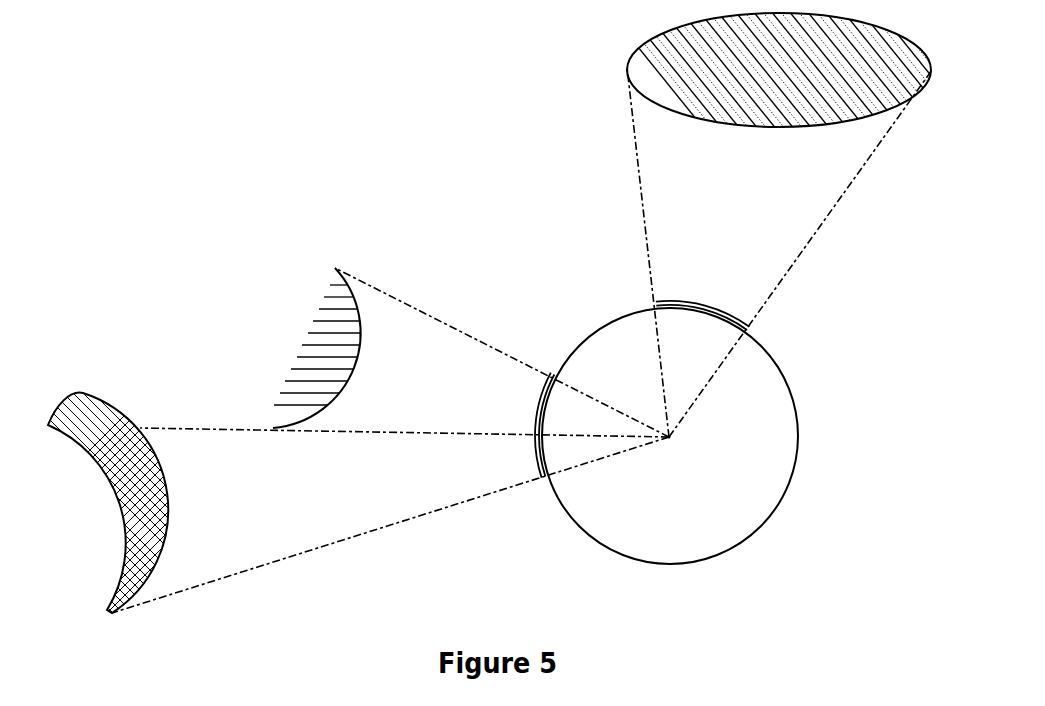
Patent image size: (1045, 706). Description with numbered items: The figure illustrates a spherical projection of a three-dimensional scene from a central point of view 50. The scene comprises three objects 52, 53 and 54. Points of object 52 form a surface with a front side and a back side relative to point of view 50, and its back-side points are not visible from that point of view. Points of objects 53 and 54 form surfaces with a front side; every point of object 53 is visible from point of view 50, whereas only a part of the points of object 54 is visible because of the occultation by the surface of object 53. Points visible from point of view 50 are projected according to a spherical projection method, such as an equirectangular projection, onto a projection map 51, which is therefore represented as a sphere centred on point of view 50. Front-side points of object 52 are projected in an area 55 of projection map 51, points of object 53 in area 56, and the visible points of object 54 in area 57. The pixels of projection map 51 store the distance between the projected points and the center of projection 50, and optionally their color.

The point of view 50 is at (668, 443).
The projection map 51 is at (682, 567).
The object 52 is at (632, 47).
The object 53 is at (345, 347).
The object 54 is at (113, 402).
The area 55 is at (702, 303).
The area 56 is at (532, 413).
The area 57 is at (530, 460).